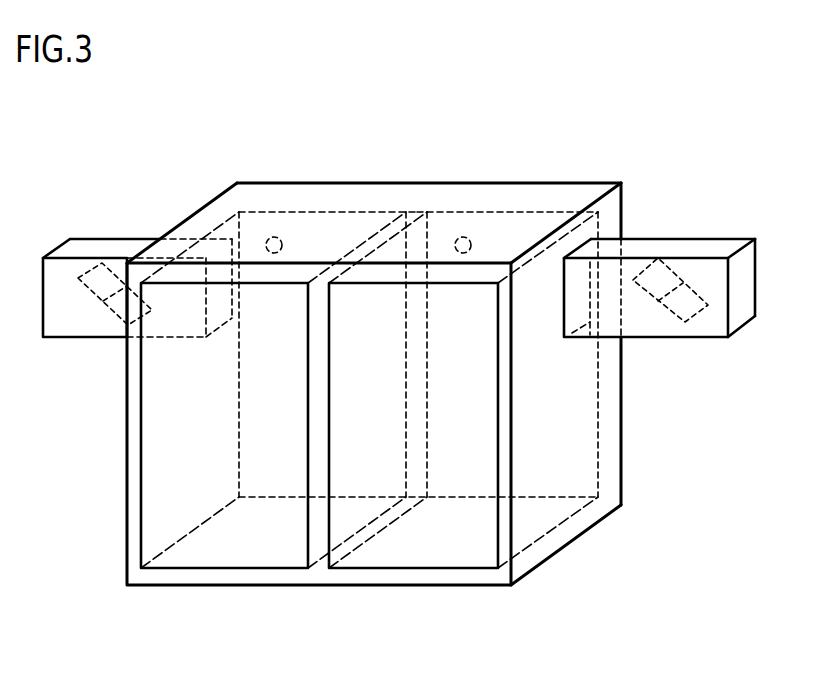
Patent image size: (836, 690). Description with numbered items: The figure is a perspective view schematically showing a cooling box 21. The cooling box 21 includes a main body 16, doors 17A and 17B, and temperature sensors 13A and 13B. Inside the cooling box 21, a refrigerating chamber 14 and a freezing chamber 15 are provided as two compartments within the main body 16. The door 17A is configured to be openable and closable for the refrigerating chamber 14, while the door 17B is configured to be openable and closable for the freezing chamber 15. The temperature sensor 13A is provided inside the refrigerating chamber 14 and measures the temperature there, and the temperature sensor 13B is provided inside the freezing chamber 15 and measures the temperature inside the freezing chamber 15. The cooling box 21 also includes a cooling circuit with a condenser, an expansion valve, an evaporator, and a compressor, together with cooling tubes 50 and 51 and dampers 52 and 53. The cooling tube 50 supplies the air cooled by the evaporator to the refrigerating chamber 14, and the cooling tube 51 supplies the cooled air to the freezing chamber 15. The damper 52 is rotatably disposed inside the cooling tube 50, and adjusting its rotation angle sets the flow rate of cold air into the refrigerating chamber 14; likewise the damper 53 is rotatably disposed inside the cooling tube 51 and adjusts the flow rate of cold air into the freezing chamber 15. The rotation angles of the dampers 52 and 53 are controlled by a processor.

The cooling box 21 is at (593, 143).
The temperature sensor 13A is at (461, 236).
The temperature sensor 13B is at (273, 236).
The refrigerating chamber 14 is at (498, 210).
The freezing chamber 15 is at (317, 210).
The main body 16 is at (322, 567).
The door 17A is at (420, 558).
The door 17B is at (230, 558).
The cooling tube 50 is at (713, 248).
The cooling tube 51 is at (72, 251).
The damper 52 is at (667, 273).
The damper 53 is at (122, 270).